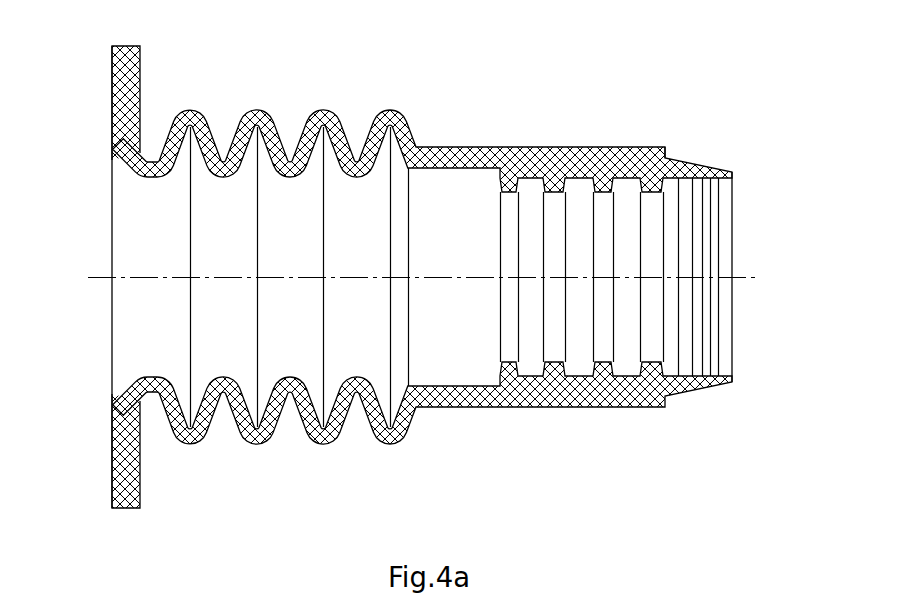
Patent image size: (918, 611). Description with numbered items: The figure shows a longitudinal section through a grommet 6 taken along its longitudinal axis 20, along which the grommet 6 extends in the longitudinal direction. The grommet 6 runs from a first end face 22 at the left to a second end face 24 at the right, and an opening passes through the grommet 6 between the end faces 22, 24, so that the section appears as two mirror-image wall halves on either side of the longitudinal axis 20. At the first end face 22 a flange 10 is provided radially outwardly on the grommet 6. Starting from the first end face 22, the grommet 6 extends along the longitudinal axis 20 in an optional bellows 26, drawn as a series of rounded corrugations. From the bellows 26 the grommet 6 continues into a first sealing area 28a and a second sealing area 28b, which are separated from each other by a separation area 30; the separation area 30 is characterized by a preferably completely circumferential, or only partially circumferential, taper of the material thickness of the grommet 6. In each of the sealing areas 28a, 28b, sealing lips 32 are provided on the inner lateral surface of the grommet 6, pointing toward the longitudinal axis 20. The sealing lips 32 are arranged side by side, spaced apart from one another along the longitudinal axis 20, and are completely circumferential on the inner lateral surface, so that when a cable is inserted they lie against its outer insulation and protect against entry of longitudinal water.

The flange 10 is at (139, 60).
The longitudinal axis 20 is at (160, 276).
The first end face 22 is at (95, 238).
The second end face 24 is at (751, 236).
The bellows 26 is at (422, 459).
The first sealing area 28a is at (663, 459).
The second sealing area 28b is at (730, 460).
The separation area 30 is at (680, 139).
The sealing lips 32 is at (506, 147).
The grommet 6 is at (567, 147).